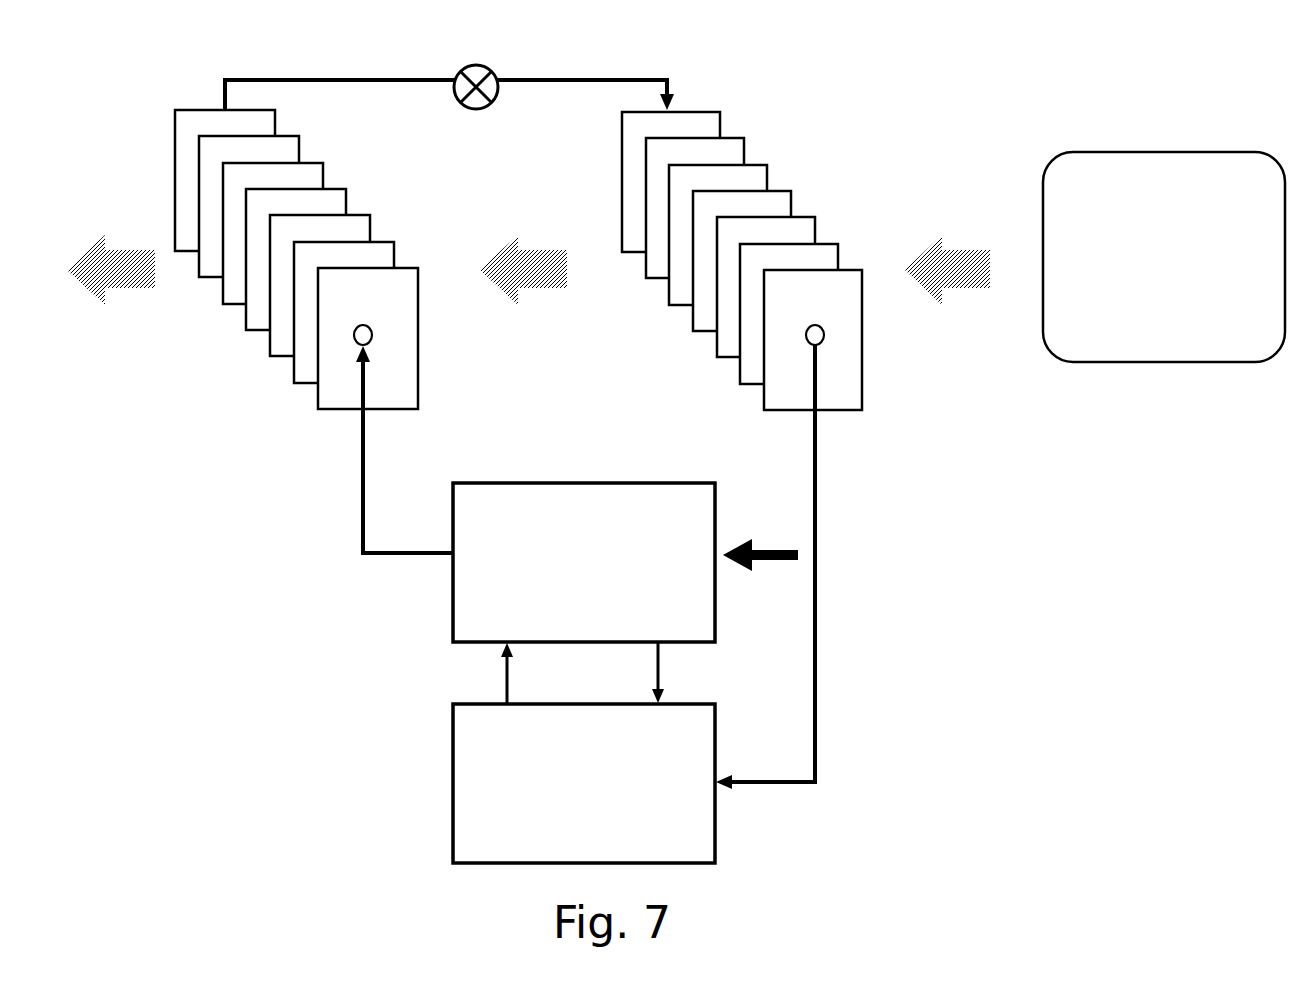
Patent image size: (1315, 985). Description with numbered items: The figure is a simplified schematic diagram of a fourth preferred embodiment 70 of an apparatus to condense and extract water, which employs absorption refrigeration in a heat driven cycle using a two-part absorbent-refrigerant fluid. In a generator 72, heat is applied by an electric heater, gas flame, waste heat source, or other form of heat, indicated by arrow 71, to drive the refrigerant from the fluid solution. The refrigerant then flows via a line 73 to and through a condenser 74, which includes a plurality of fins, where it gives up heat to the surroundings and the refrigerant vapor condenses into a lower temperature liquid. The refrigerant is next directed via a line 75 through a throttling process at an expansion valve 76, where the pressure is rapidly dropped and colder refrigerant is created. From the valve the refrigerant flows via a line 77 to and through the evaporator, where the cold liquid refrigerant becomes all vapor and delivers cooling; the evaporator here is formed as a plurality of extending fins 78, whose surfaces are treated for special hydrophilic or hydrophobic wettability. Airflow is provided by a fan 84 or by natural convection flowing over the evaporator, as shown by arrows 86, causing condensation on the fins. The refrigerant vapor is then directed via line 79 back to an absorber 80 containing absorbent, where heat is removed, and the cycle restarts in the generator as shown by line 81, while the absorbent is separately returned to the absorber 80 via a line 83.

The fourth preferred embodiment 70 is at (279, 660).
The arrow 71 is at (768, 563).
The generator 72 is at (572, 480).
The line 73 is at (357, 477).
The condenser 74 is at (178, 168).
The line 75 is at (265, 77).
The expansion valve 76 is at (462, 104).
The line 77 is at (608, 76).
The extending fins 78 is at (848, 385).
The line 79 is at (817, 668).
The absorber 80 is at (703, 830).
The line 81 is at (510, 673).
The line 83 is at (661, 670).
The fan 84 is at (1133, 330).
The arrows 86 is at (118, 283).